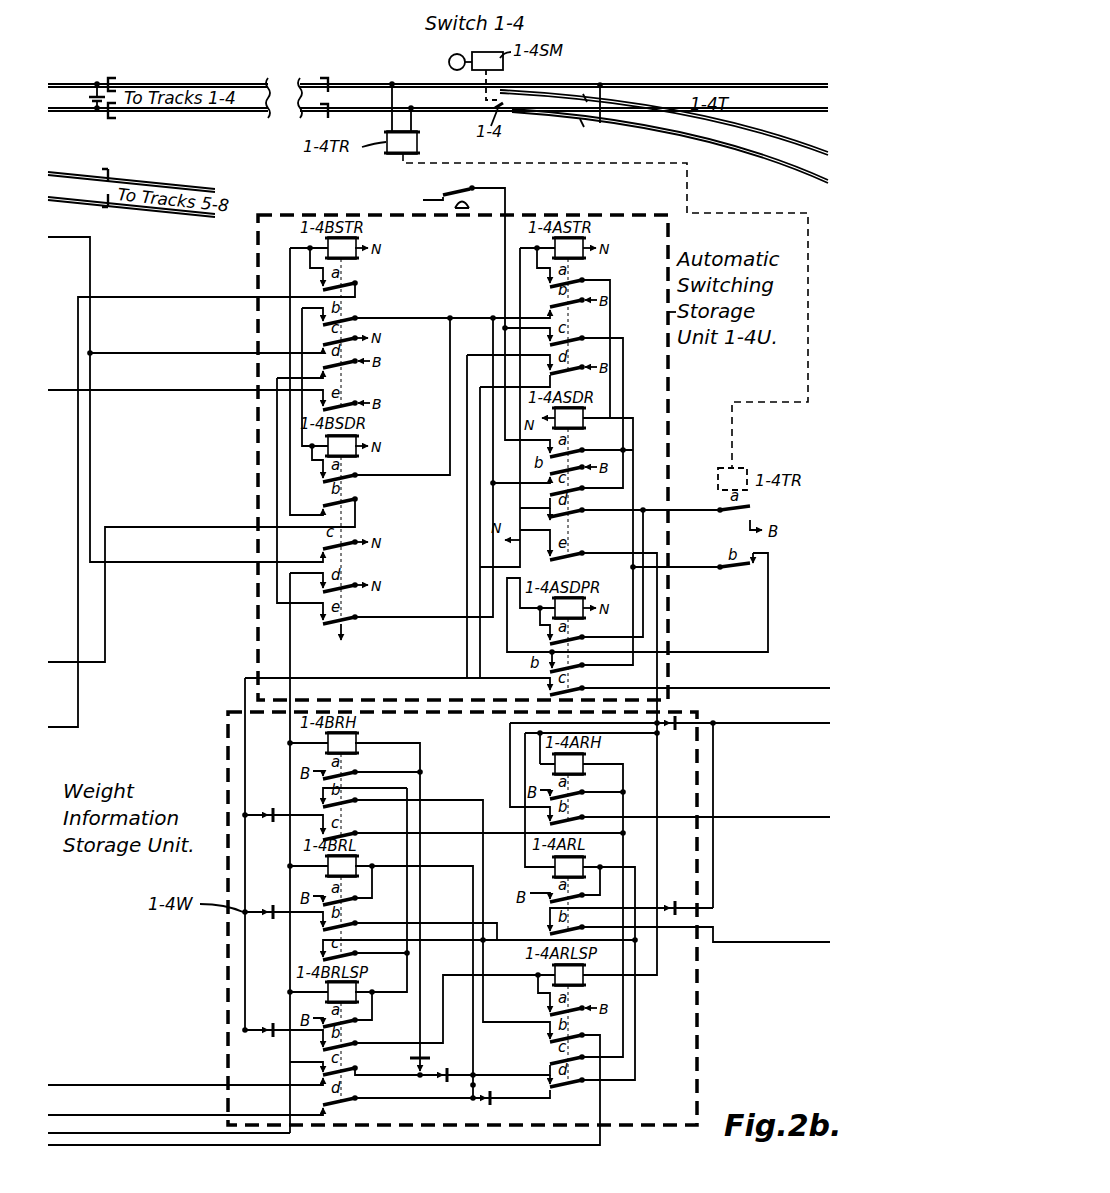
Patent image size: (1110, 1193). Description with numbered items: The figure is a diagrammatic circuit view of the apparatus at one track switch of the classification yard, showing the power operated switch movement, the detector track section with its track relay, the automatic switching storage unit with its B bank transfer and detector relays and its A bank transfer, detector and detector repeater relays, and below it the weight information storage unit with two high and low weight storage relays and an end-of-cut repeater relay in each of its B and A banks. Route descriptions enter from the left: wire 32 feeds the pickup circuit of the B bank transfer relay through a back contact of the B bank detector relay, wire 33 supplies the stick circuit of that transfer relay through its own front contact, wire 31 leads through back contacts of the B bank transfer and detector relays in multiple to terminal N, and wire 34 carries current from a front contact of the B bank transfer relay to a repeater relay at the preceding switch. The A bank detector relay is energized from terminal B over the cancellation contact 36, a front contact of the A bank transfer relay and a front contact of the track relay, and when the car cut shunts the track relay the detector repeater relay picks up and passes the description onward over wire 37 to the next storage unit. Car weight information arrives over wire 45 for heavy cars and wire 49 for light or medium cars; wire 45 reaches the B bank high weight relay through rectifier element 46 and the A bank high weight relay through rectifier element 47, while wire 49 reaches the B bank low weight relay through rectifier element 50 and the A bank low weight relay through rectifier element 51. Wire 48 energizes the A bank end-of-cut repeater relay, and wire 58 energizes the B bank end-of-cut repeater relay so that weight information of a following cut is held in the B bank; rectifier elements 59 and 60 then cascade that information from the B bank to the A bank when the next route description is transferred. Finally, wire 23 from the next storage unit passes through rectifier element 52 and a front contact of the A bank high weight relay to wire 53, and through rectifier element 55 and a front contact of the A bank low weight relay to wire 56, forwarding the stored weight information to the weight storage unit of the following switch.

The wire 23 is at (670, 804).
The wire 31 is at (185, 388).
The wire 32 is at (201, 580).
The wire 33 is at (201, 505).
The wire 34 is at (185, 385).
The cancellation contact 36 is at (467, 186).
The wire 37 is at (706, 677).
The wire 45 is at (185, 1073).
The rectifier element 46 is at (417, 1057).
The rectifier element 47 is at (454, 1064).
The wire 48 is at (169, 1124).
The wire 49 is at (185, 1103).
The rectifier element 50 is at (470, 1087).
The rectifier element 51 is at (494, 1104).
The rectifier element 52 is at (678, 730).
The wire 53 is at (706, 805).
The rectifier element 55 is at (676, 903).
The wire 56 is at (706, 930).
The wire 58 is at (298, 1146).
The rectifier element 59 is at (282, 884).
The rectifier element 60 is at (272, 1036).